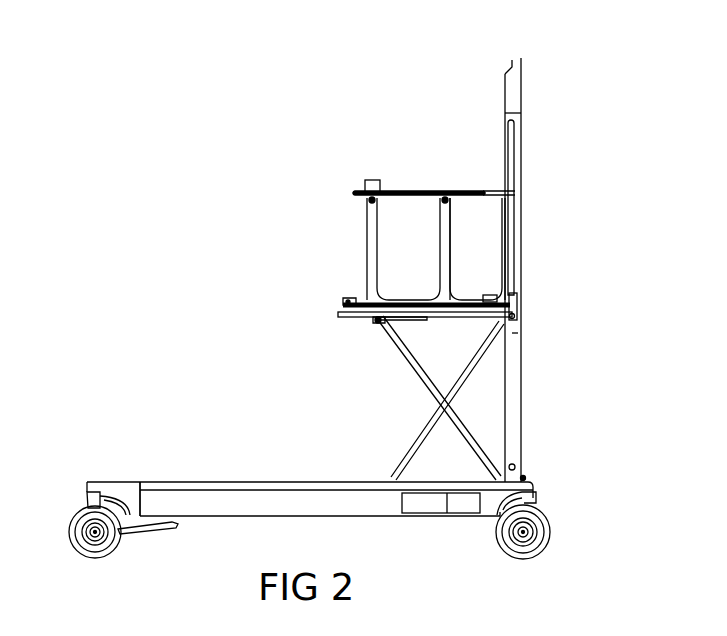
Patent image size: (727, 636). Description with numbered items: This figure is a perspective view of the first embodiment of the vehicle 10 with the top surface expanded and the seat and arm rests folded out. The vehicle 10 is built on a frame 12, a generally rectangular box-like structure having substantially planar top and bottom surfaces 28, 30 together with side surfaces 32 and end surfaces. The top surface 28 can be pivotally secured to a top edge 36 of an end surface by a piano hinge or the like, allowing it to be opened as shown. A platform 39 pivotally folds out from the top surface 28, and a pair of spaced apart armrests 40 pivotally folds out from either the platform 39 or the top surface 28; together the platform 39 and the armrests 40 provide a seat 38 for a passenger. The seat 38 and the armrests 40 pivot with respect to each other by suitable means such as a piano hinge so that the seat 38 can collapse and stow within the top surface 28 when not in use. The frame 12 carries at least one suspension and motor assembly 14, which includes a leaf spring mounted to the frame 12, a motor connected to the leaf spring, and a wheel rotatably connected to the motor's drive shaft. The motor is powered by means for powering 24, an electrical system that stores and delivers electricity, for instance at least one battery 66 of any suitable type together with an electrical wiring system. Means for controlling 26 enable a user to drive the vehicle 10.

The vehicle 10 is at (136, 335).
The frame 12 is at (303, 503).
The suspension and motor assembly 14 is at (575, 548).
The means for powering 24 is at (423, 505).
The means for controlling 26 is at (373, 170).
The top surface 28 is at (522, 232).
The bottom surface 30 is at (260, 517).
The side surface 32 is at (200, 502).
The top edge 36 is at (524, 479).
The seat 38 is at (318, 180).
The platform 39 is at (412, 308).
The armrests 40 is at (423, 190).
The battery 66 is at (447, 505).